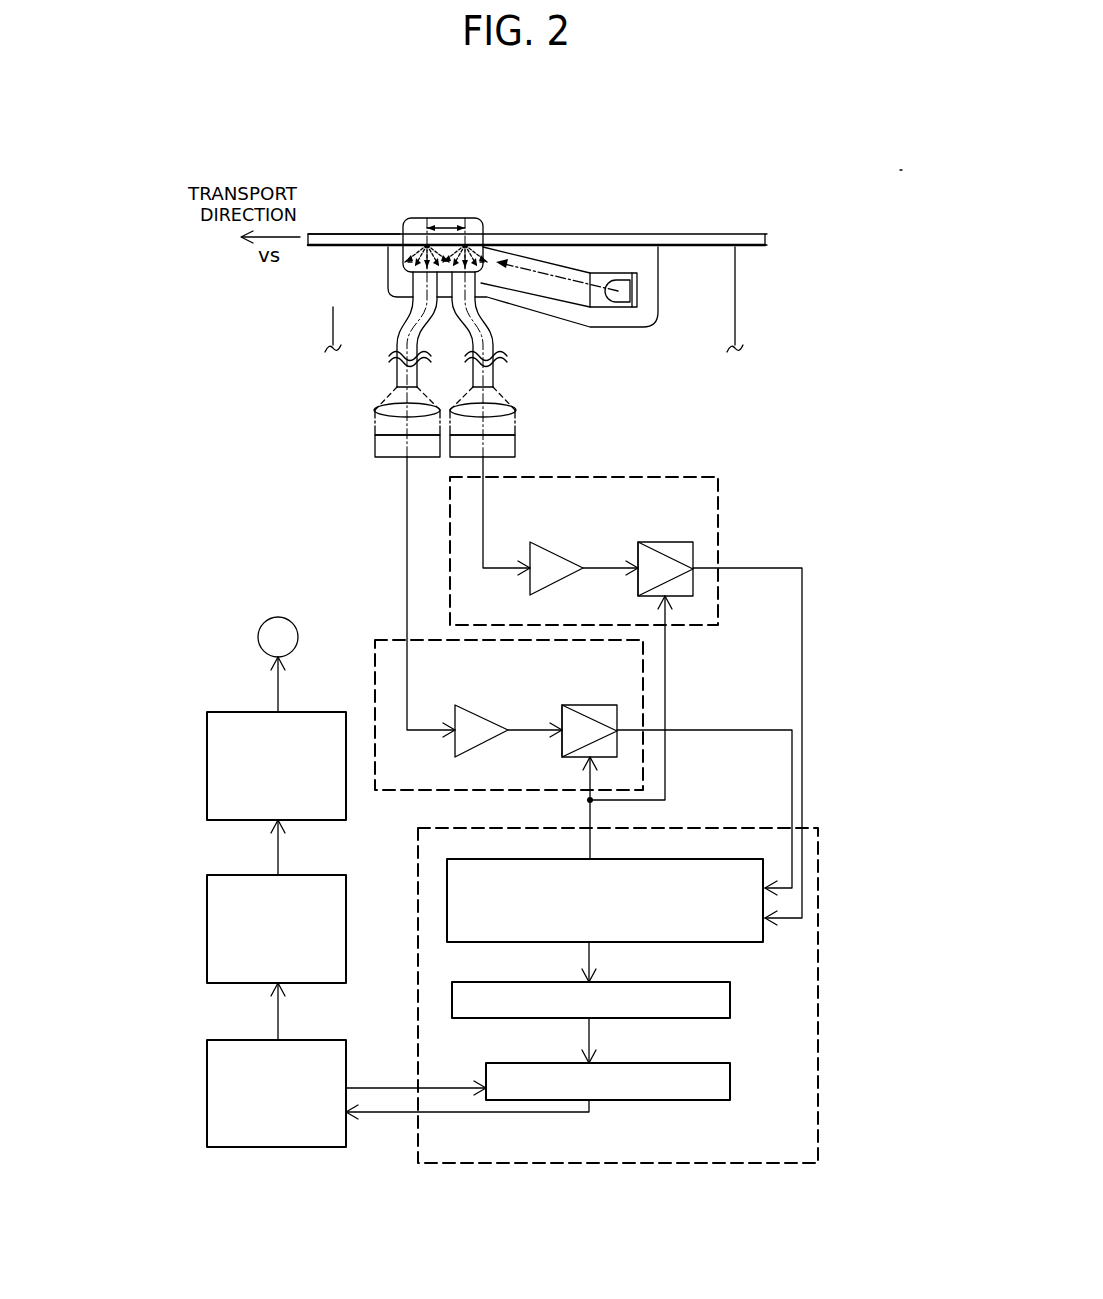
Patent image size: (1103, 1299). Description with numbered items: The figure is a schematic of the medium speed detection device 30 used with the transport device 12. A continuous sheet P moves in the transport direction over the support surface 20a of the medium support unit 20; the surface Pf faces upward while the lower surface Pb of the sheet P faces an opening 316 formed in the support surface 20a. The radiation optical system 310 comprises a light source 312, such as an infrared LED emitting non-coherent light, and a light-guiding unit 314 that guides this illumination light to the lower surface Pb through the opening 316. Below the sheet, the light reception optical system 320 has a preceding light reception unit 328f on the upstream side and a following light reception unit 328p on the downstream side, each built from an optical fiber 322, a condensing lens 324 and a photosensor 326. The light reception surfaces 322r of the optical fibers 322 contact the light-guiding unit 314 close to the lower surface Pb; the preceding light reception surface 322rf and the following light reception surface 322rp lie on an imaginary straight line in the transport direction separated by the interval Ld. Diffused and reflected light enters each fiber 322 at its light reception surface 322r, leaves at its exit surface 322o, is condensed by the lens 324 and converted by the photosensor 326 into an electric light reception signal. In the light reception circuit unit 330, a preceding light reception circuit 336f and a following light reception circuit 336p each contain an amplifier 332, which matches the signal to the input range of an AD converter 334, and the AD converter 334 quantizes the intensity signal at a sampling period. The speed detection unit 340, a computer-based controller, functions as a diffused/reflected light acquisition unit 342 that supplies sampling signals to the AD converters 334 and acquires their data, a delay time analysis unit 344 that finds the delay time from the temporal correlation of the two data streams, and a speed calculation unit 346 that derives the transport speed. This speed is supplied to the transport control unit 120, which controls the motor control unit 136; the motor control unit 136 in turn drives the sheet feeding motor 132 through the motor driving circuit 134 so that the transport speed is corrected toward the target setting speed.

The transport device 12 is at (353, 895).
The medium support unit 20 is at (740, 305).
The support surface 20a is at (372, 240).
The medium speed detection device 30 is at (843, 192).
The transport control unit 120 is at (207, 1090).
The sheet feeding motor 132 is at (258, 633).
The motor driving circuit 134 is at (207, 770).
The motor control unit 136 is at (207, 935).
The radiation optical system 310 is at (535, 226).
The light source 312 is at (628, 248).
The light-guiding unit 314 is at (556, 262).
The opening 316 is at (448, 222).
The light reception optical system 320 is at (512, 337).
The optical fiber 322 is at (398, 384).
The exit surface 322o is at (400, 378).
The light reception surface 322r is at (466, 299).
The following light reception surface 322rp is at (410, 265).
The preceding light reception surface 322rf is at (490, 276).
The condensing lens 324 is at (380, 410).
The photosensor 326 is at (378, 450).
The following light reception unit 328p is at (295, 365).
The preceding light reception unit 328f is at (605, 365).
The light reception circuit unit 330 is at (641, 691).
The amplifier 332 is at (557, 541).
The AD converter 334 is at (665, 541).
The preceding light reception circuit 336f is at (720, 489).
The following light reception circuit 336p is at (645, 656).
The speed detection unit 340 is at (655, 995).
The diffused/reflected light acquisition unit 342 is at (500, 859).
The delay time analysis unit 344 is at (490, 982).
The speed calculation unit 346 is at (490, 1063).
The continuous sheet P is at (811, 216).
The medium front surface Pf is at (759, 232).
The lower surface Pb is at (760, 252).
The interval Ld is at (452, 227).